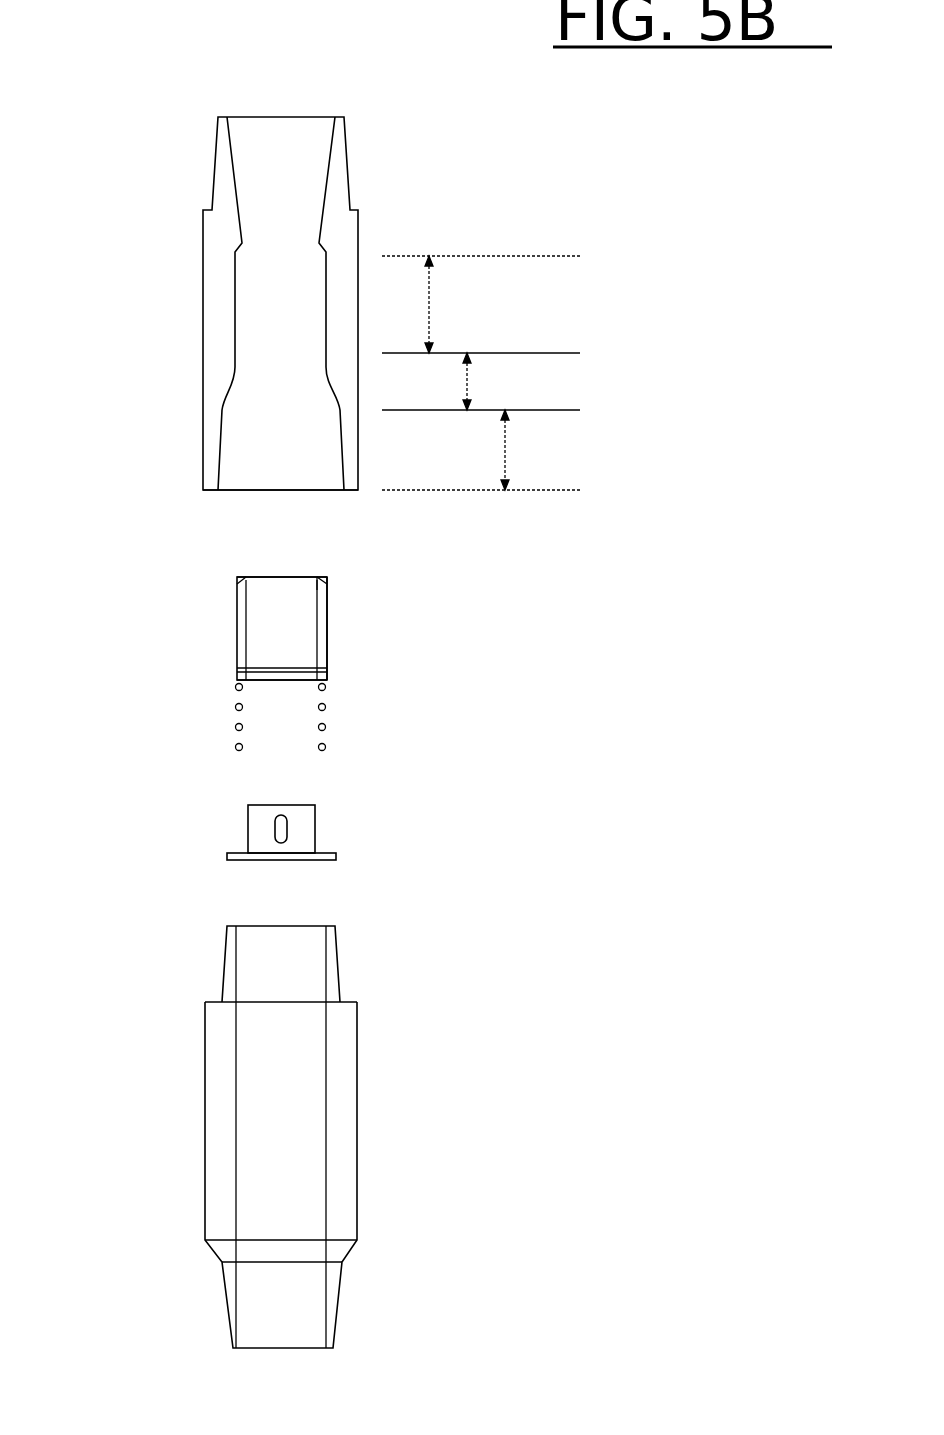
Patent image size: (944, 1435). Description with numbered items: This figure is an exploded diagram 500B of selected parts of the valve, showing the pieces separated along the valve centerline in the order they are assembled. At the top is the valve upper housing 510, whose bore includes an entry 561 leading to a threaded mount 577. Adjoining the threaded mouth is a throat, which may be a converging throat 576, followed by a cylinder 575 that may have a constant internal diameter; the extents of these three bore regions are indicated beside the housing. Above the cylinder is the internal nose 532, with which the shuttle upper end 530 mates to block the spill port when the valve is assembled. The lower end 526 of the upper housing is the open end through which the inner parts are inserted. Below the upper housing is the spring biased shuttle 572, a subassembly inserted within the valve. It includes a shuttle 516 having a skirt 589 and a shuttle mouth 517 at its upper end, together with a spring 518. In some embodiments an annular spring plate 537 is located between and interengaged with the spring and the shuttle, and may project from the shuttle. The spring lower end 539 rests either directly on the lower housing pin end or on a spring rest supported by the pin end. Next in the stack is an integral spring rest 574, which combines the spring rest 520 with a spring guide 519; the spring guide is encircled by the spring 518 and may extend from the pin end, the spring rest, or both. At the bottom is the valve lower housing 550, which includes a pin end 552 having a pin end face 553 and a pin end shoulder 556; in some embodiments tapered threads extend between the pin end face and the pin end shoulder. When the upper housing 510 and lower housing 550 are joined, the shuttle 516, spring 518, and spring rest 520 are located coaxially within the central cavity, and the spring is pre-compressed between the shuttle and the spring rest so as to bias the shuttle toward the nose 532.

The valve exploded diagram 500B is at (722, 166).
The valve upper housing 510 is at (385, 222).
The internal nose 532 is at (237, 250).
The entry 561 is at (240, 475).
The bottom end of housing 526 is at (355, 490).
The cylinder 575 is at (481, 304).
The converging throat 576 is at (481, 381).
The threaded mount 577 is at (481, 450).
The spring biased shuttle 572 is at (495, 660).
The shuttle 516 is at (240, 632).
The shuttle upper end 530 is at (242, 580).
The shuttle mouth 517 is at (327, 580).
The skirt 589 is at (325, 622).
The annular spring plate 537 is at (325, 675).
The valve spring 518 is at (322, 727).
The spring lower end 539 is at (241, 745).
The integral spring rest 574 is at (383, 844).
The spring guide 519 is at (265, 832).
The spring rest 520 is at (235, 862).
The valve lower housing 550 is at (375, 1183).
The pin end face 553 is at (336, 926).
The pin end shoulder 556 is at (342, 1002).
The pin end 552 is at (232, 978).